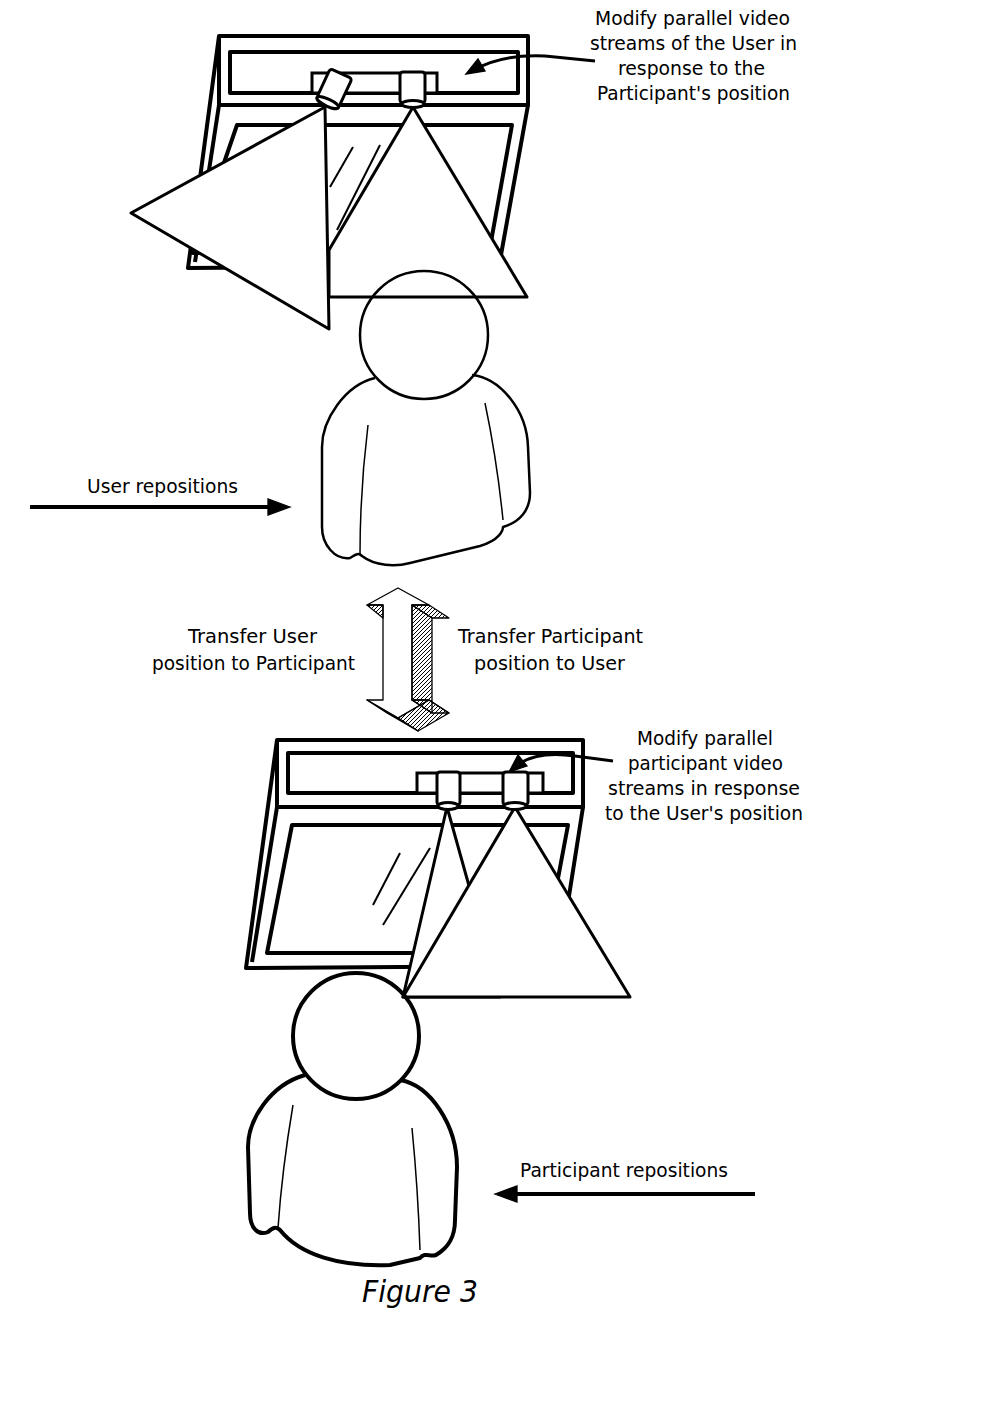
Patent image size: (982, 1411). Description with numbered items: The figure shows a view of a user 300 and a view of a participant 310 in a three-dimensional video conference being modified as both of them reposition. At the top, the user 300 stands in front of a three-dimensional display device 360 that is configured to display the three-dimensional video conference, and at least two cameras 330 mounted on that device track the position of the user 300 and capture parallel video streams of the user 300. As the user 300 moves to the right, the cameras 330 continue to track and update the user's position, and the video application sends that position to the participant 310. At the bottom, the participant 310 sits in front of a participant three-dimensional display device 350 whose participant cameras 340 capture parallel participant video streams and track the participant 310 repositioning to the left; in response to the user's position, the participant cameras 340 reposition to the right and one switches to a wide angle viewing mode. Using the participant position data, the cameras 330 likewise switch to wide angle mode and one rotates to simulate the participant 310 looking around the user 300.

The user 300 is at (447, 491).
The participant 310 is at (370, 1193).
The cameras 330 is at (298, 72).
The participant cameras 340 is at (397, 782).
The participant 3D display device 350 is at (240, 890).
The 3D display device 360 is at (103, 246).